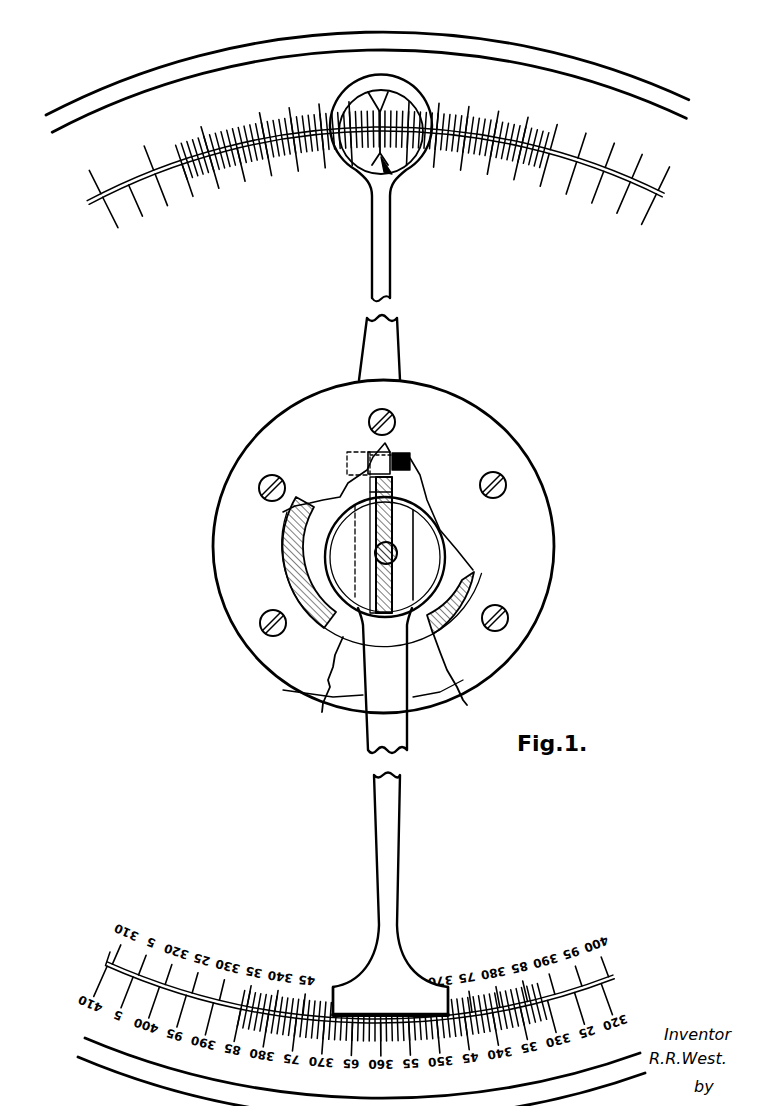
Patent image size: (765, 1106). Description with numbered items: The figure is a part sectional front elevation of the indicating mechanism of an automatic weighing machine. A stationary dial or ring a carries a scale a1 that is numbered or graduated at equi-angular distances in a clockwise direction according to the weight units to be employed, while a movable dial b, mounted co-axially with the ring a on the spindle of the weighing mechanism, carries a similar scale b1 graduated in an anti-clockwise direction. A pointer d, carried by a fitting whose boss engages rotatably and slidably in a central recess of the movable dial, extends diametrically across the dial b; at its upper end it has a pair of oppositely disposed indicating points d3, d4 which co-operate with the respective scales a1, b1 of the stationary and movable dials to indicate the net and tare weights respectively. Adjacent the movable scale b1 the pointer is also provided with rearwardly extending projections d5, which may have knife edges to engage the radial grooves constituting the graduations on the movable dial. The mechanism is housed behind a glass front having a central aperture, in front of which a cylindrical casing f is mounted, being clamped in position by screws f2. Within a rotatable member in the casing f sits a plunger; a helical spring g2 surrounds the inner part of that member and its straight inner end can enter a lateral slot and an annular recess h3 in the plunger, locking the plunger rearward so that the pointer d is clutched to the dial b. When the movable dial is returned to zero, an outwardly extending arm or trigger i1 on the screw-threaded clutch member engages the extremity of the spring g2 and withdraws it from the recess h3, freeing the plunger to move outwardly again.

The stationary dial or ring a is at (622, 110).
The scale a1 is at (568, 133).
The movable dial b is at (434, 346).
The scale b1 is at (630, 207).
The pointer d is at (399, 810).
The indicating point d3 is at (380, 93).
The indicating point d4 is at (385, 166).
The rearwardly extending projection d5 is at (450, 980).
The cylindrical casing f is at (288, 549).
The screws f2 is at (274, 632).
The helical spring g2 is at (366, 477).
The annular recess h3 is at (395, 548).
The arm or trigger i1 is at (408, 462).